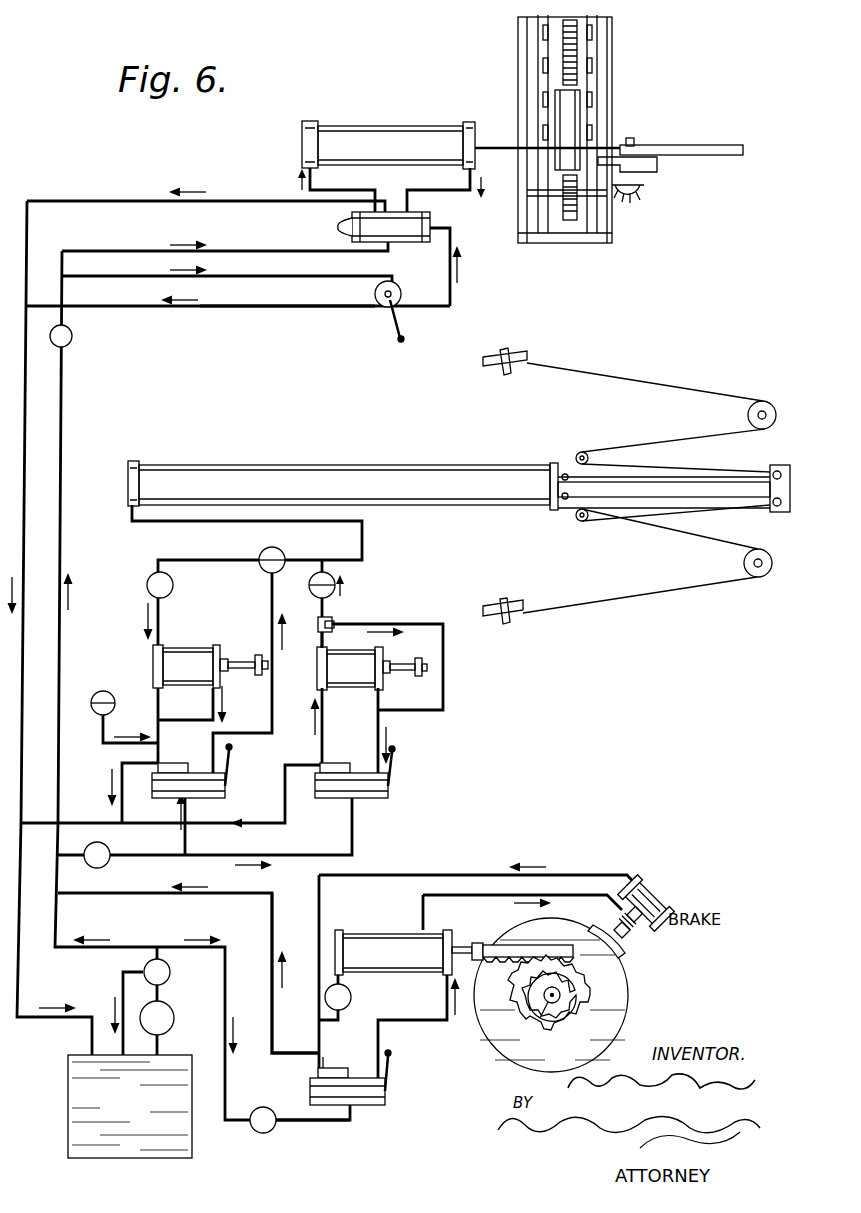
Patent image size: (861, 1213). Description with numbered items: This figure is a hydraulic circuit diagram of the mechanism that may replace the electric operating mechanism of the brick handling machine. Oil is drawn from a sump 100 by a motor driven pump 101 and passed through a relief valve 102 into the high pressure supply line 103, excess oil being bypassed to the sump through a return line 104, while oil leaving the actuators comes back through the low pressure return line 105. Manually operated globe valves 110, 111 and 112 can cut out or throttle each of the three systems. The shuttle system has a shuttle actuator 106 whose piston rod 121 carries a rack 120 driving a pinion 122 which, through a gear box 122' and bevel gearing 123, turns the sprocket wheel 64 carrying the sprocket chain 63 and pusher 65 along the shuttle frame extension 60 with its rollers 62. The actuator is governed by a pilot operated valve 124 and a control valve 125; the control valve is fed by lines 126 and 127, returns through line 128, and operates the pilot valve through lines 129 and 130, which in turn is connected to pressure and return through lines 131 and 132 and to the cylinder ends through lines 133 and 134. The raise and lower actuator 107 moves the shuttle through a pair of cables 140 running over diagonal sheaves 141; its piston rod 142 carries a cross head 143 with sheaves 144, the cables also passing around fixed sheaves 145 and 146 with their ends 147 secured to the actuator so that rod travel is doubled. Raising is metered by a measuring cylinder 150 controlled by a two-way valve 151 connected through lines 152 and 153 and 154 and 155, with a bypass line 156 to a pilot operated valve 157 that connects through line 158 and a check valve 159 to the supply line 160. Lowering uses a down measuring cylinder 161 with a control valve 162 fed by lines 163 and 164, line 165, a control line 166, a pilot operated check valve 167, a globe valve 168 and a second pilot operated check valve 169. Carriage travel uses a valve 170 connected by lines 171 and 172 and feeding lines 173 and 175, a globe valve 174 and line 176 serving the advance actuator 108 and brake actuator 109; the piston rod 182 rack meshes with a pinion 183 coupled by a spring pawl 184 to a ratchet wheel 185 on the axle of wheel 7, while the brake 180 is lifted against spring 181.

The wheel 7 is at (628, 995).
The shuttle frame extension 60 is at (598, 82).
The rollers 62 is at (596, 36).
The sprocket chain 63 is at (562, 80).
The sprocket wheel 64 is at (567, 222).
The pusher 65 is at (570, 115).
The sump 100 is at (68, 1100).
The pump 101 is at (176, 1025).
The relief valve 102 is at (171, 972).
The high pressure supply line 103 is at (62, 406).
The return line 104 is at (122, 987).
The low pressure return line 105 is at (40, 643).
The shuttle actuator 106 is at (415, 126).
The raise and lower actuator 107 is at (228, 470).
The advance actuator 108 is at (370, 935).
The brake actuator 109 is at (656, 904).
The globe valve 110 is at (72, 337).
The globe valve 111 is at (104, 864).
The globe valve 112 is at (257, 1131).
The rack 120 is at (706, 151).
The piston rod 121 is at (492, 147).
The pinion 122 is at (655, 130).
The gear box 122' is at (645, 176).
The bevel gearing 123 is at (625, 198).
The pilot operated valve 124 is at (425, 220).
The control valve 125 is at (386, 308).
The line 126 is at (66, 304).
The line 127 is at (272, 296).
The line 128 is at (232, 310).
The line 129 is at (452, 292).
The line 130 is at (330, 226).
The line 131 is at (252, 244).
The line 132 is at (262, 196).
The line 133 is at (447, 187).
The line 134 is at (373, 187).
The cables 140 is at (648, 383).
The diagonal sheaves 141 is at (516, 360).
The piston rod 142 is at (566, 500).
The cross head 143 is at (779, 468).
The sheaves 144 is at (774, 470).
The fixed sheaves 145 is at (758, 402).
The fixed sheaves 146 is at (583, 452).
The cable ends 147 is at (566, 473).
The measuring cylinder 150 is at (354, 690).
The two-way valve 151 is at (365, 800).
The line 152 is at (222, 856).
The line 153 is at (290, 815).
The line 154 is at (320, 745).
The line 155 is at (382, 722).
The bypass line 156 is at (420, 623).
The pilot operated valve 157 is at (333, 620).
The line 158 is at (318, 640).
The check valve 159 is at (333, 573).
The supply line 160 is at (365, 541).
The down measuring cylinder 161 is at (192, 650).
The control valve 162 is at (218, 796).
The line 163 is at (186, 845).
The line 164 is at (122, 810).
The line 165 is at (186, 719).
The control line 166 is at (272, 712).
The pilot operated check valve 167 is at (276, 552).
The globe valve 168 is at (174, 585).
The pilot operated check valve 169 is at (95, 694).
The valve 170 is at (360, 1108).
The line 171 is at (318, 1124).
The line 172 is at (292, 1058).
The line 173 is at (462, 876).
The globe valve 174 is at (352, 998).
The line 175 is at (389, 1046).
The line 176 is at (426, 998).
The brake 180 is at (626, 950).
The spring 181 is at (636, 933).
The piston rod 182 is at (483, 947).
The pinion 183 is at (522, 1002).
The spring pawl 184 is at (573, 973).
The ratchet wheel 185 is at (547, 1012).